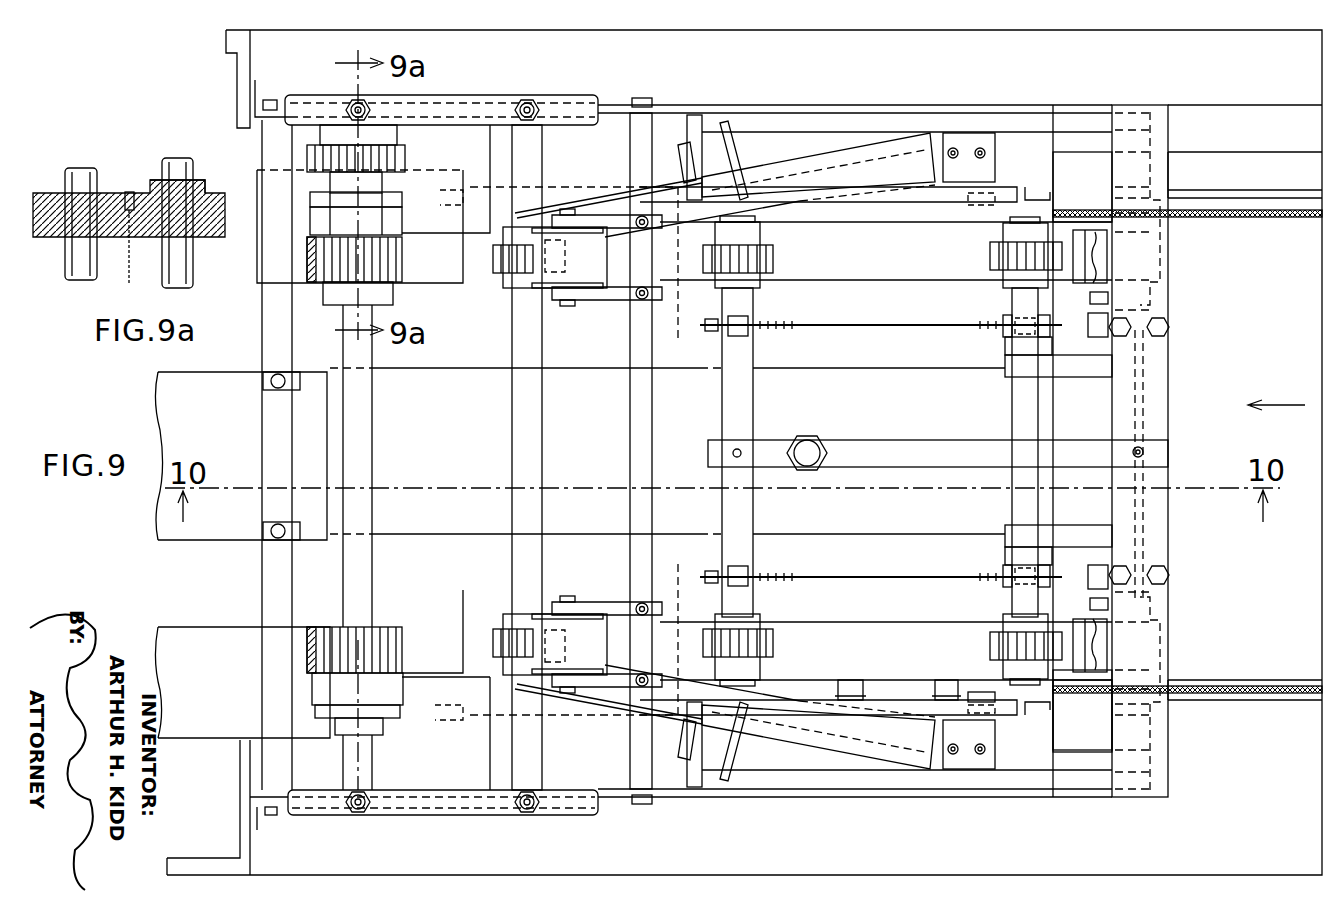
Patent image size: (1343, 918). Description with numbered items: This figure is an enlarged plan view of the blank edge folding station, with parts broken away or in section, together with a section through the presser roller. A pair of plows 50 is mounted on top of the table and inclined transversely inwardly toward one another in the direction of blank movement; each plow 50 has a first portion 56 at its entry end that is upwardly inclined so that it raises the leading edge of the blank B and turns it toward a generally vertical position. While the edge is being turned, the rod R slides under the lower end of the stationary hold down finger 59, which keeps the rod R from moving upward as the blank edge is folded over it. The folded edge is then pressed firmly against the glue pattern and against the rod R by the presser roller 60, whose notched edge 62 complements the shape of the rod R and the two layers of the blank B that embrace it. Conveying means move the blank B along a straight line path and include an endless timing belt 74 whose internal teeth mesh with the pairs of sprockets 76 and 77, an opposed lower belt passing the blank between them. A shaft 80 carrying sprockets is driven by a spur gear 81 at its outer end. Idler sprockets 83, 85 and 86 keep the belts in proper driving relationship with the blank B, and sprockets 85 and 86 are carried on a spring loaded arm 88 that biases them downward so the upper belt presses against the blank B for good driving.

In FIG. 9, the plow 50 is at (814, 160).
In FIG. 9, the first portion of the plow 56 is at (995, 165).
In FIG. 9, the hold down finger 59 is at (970, 210).
In FIG. 9a, the roller 60 is at (205, 237).
In FIG. 9, the roller 60 is at (402, 221).
In FIG. 9a, the notched edge 62 is at (218, 195).
In FIG. 9, the notched edge 62 is at (403, 196).
In FIG. 9, the belt 74 is at (310, 268).
In FIG. 9, the sprocket 76 is at (402, 270).
In FIG. 9, the sprocket 77 is at (1160, 282).
In FIG. 9a, the shaft 80 is at (162, 166).
In FIG. 9, the spur gear 81 is at (405, 158).
In FIG. 9, the idler sprocket 83 is at (500, 648).
In FIG. 9, the idler sprocket 85 is at (773, 260).
In FIG. 9, the idler sprocket 86 is at (992, 264).
In FIG. 9, the spring loaded arm 88 is at (896, 440).
In FIG. 9a, the blank B is at (128, 274).
In FIG. 9, the blank B is at (1193, 162).
In FIG. 9, the rod R is at (1232, 197).